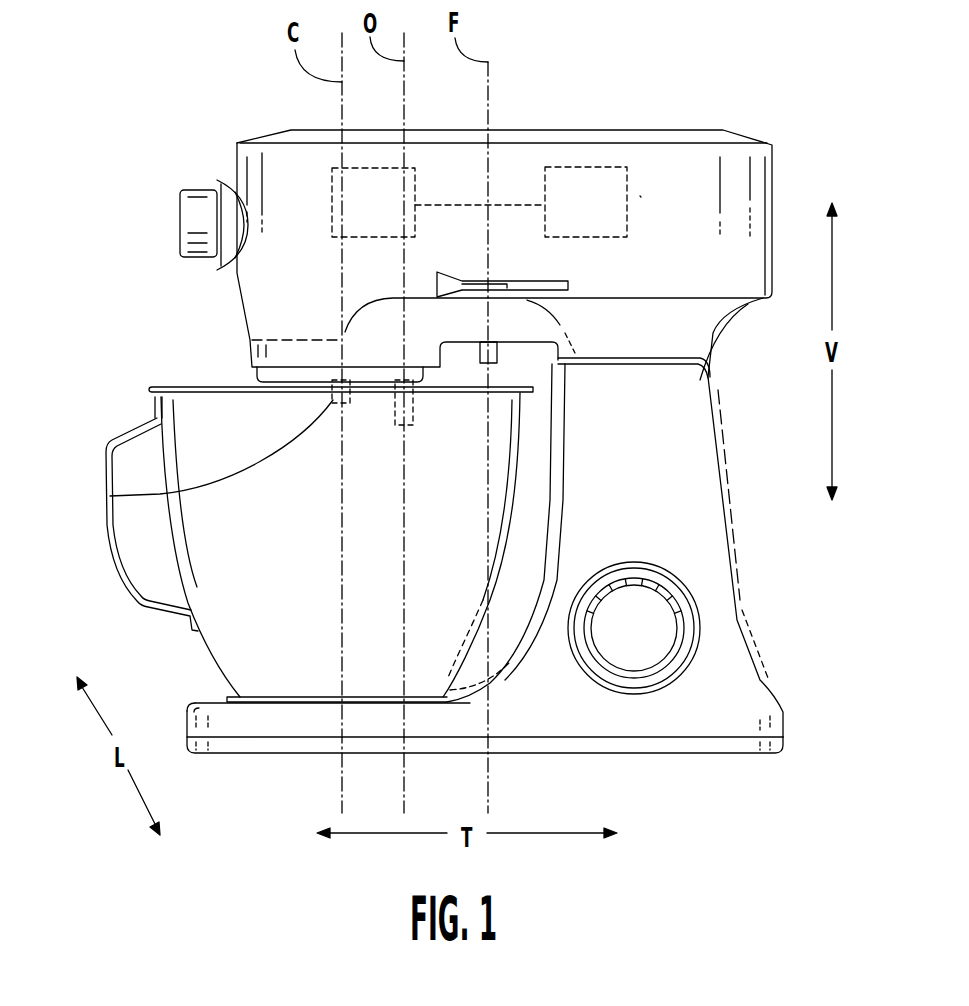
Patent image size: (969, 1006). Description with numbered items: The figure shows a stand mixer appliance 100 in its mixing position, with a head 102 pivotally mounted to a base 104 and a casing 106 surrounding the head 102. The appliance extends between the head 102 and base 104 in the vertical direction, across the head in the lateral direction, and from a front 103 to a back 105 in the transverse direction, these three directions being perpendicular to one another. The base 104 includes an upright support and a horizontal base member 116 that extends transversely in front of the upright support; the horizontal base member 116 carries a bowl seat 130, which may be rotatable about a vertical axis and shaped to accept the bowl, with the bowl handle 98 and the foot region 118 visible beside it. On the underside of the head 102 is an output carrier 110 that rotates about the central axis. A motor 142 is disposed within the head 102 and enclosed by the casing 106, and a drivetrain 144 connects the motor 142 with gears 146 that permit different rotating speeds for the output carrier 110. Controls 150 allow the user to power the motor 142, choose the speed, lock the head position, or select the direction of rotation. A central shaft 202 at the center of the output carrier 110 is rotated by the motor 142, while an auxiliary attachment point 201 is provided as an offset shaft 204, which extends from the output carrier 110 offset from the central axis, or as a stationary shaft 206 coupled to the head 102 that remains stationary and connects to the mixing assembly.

The mixer appliance 100 is at (236, 72).
The bowl handle 98 is at (157, 453).
The head 102 is at (540, 130).
The front 103 is at (224, 295).
The base 104 is at (799, 684).
The back 105 is at (786, 174).
The casing 106 is at (651, 193).
The output carrier 110 is at (265, 375).
The horizontal base member 116 is at (275, 755).
The column foot 118 is at (525, 694).
The bowl seat 130 is at (221, 688).
The motor 142 is at (606, 187).
The drivetrain 144 is at (463, 196).
The gears 146 is at (376, 186).
The controls 150 is at (455, 283).
The auxiliary attachment point 201 is at (478, 418).
The central shaft 202 is at (110, 496).
The offset shaft 204 is at (413, 425).
The stationary shaft 206 is at (500, 362).